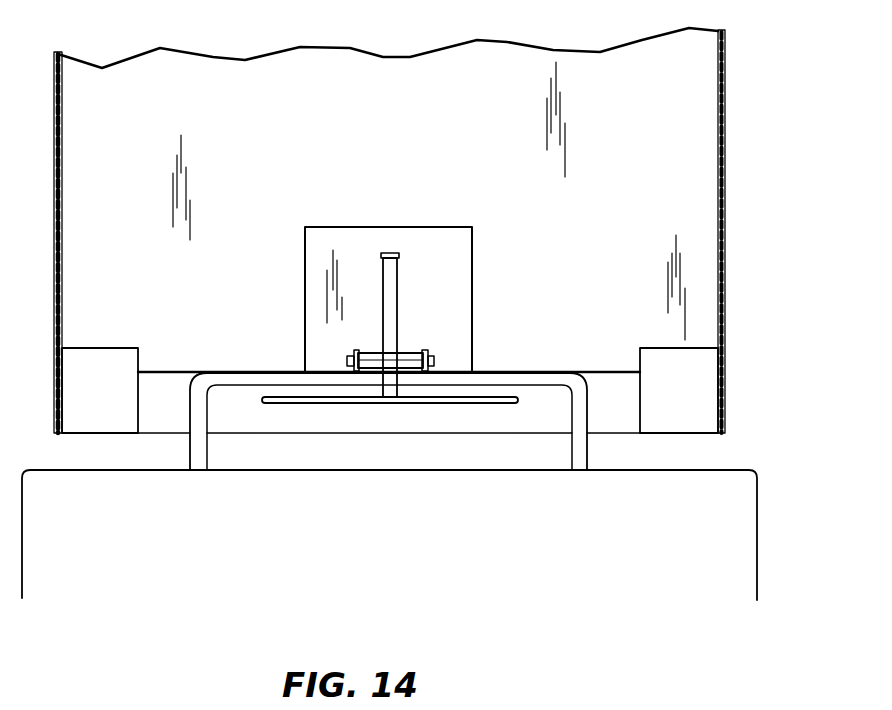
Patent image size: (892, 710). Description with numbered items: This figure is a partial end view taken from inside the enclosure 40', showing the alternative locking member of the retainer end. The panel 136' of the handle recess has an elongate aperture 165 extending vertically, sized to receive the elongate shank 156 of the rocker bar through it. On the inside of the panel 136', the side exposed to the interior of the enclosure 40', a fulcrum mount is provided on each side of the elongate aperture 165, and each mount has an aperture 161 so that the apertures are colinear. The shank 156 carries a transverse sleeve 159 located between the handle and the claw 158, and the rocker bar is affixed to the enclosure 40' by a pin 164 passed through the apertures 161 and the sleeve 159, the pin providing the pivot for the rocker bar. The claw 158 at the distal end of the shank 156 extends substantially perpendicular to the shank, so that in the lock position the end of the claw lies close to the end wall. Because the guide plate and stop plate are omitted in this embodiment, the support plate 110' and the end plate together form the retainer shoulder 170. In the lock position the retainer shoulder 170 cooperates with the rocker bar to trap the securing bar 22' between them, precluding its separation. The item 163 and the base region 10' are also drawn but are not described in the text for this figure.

The enclosure 40' is at (438, 230).
The panel 136' is at (401, 267).
The support plate 110' is at (389, 365).
The retainer shoulder 170 is at (619, 372).
The securing bar 22' is at (417, 447).
The claw 158 is at (463, 407).
The elongate shank 156 is at (383, 284).
The elongate aperture 165 is at (381, 250).
The transverse sleeve 159 is at (356, 351).
The aperture 161 is at (347, 358).
The flange 163 is at (428, 350).
The pin 164 is at (434, 361).
The base 10' is at (435, 535).